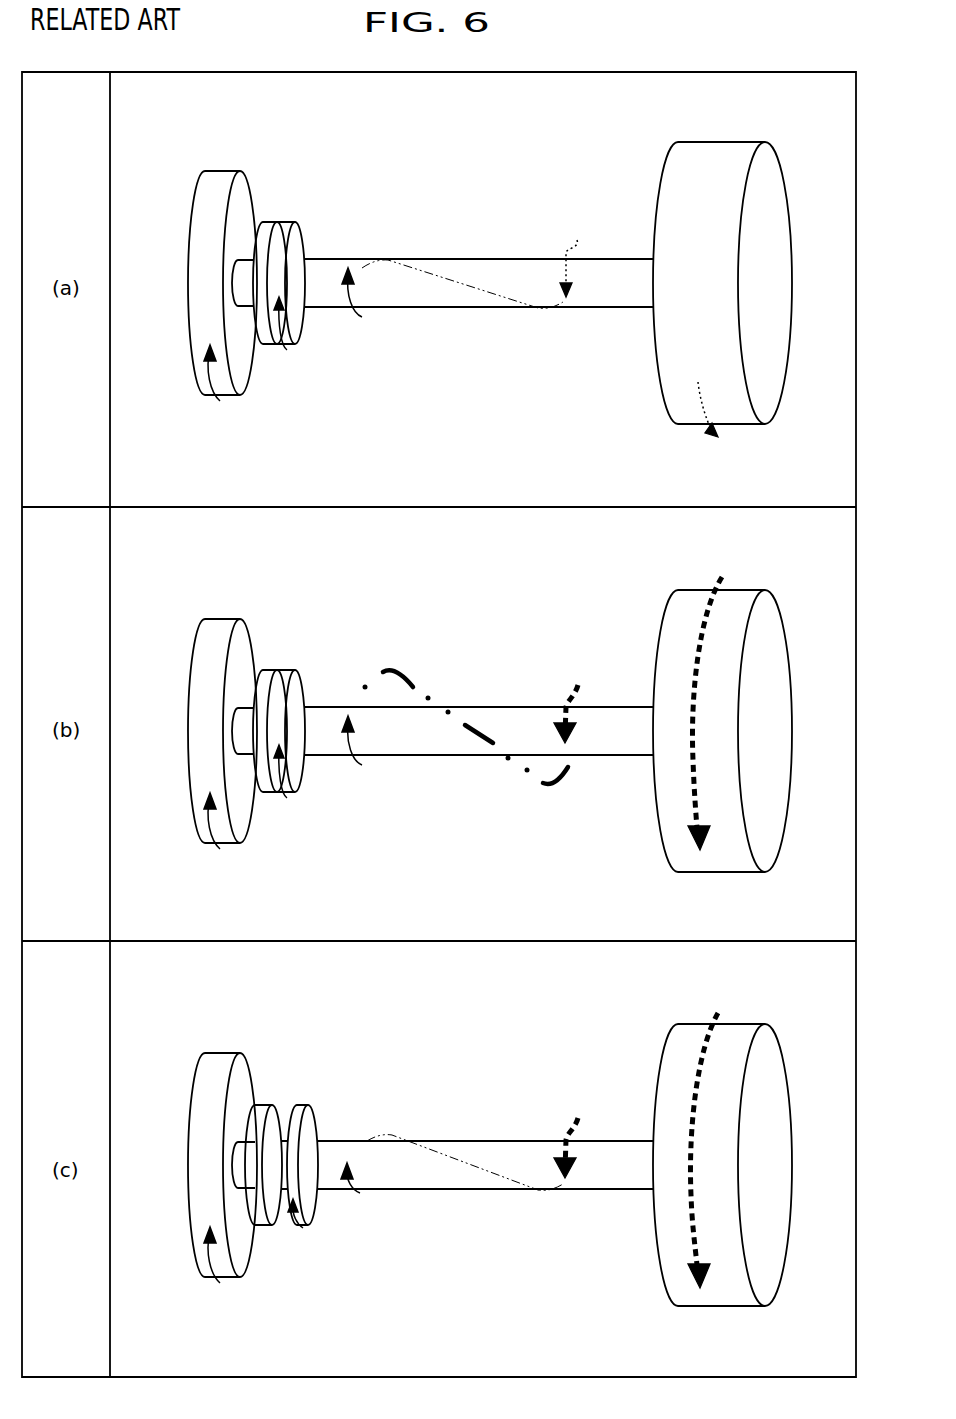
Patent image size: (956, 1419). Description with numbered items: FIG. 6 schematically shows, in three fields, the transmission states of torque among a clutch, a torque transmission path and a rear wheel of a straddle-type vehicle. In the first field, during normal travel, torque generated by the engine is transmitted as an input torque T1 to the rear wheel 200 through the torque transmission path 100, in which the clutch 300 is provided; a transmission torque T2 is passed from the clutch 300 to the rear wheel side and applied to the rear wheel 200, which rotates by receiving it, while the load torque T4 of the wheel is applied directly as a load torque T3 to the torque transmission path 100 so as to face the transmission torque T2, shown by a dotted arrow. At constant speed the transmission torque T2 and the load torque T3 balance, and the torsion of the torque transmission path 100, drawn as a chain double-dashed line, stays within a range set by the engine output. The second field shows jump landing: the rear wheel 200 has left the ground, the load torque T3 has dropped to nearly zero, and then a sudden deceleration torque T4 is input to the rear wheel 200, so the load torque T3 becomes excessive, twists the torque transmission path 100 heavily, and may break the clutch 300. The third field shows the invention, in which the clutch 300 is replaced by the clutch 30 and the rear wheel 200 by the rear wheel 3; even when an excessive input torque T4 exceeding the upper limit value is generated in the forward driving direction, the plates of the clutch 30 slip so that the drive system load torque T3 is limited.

The torque transmission path 100 is at (440, 200).
The rear wheel 200 is at (592, 704).
The rotating body 3 is at (733, 1032).
The clutch 300 is at (318, 683).
The clutch 30 is at (297, 1081).
The input torque T1 is at (214, 382).
The transmission torque T2 is at (350, 293).
The load torque T3 is at (568, 257).
The load torque T4 is at (703, 407).